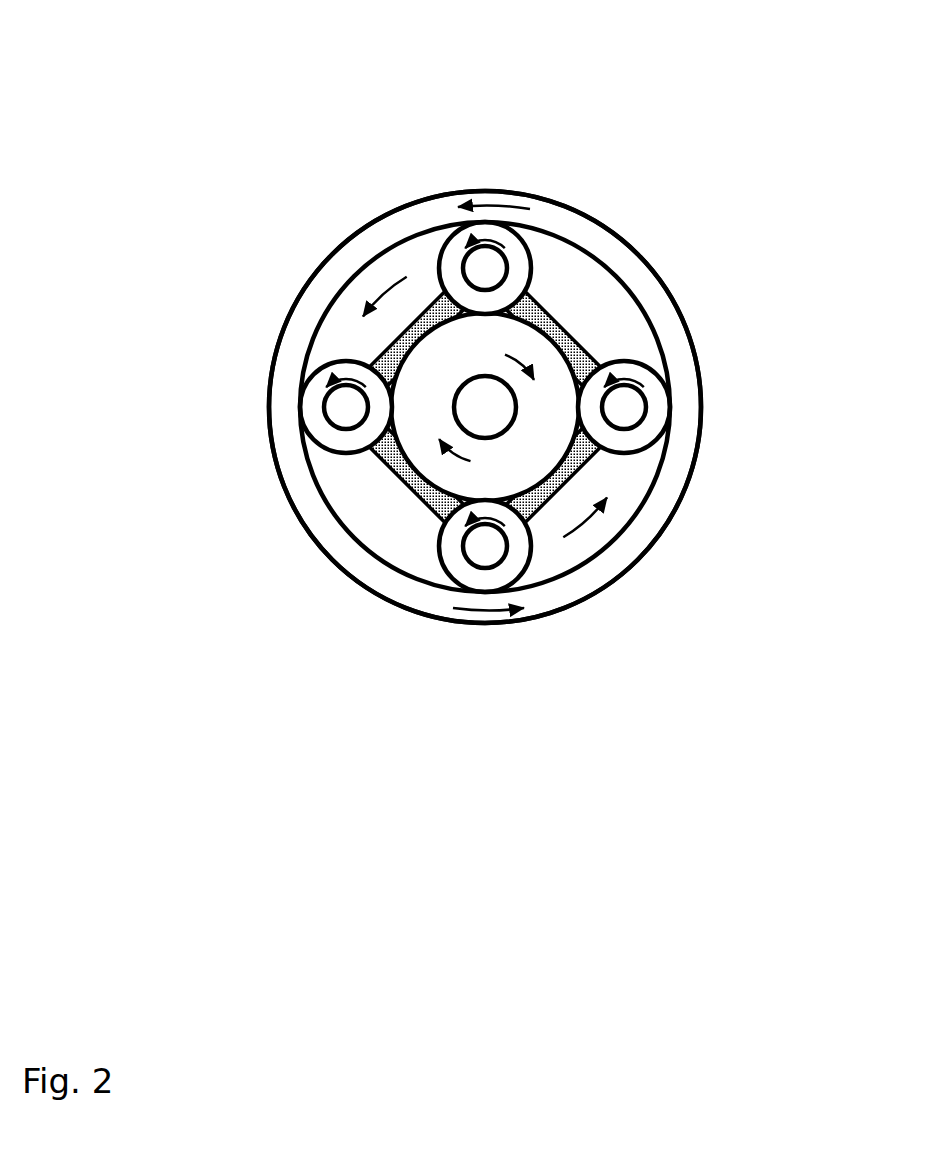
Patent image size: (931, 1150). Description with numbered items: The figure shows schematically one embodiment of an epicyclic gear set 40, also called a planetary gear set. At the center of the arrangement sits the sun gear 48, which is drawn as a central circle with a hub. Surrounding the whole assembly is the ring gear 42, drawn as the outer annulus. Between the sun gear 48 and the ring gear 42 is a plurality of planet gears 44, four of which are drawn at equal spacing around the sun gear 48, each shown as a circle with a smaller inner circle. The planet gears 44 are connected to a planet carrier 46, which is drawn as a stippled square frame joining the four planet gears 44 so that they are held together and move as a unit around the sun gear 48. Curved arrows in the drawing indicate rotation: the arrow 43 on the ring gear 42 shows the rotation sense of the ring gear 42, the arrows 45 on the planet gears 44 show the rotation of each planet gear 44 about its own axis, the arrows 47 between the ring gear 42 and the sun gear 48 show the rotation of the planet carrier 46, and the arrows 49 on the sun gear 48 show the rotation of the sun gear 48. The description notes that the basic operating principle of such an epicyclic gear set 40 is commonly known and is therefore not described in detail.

The epicyclic gear set 40 is at (655, 152).
The ring gear 42 is at (330, 250).
The rotation direction of outer ring 43 is at (496, 205).
The planet gears 44 is at (315, 408).
The rotation direction of roller 45 is at (350, 373).
The planet carrier 46 is at (426, 495).
The rotation direction of cage 47 is at (381, 288).
The sun gear 48 is at (557, 380).
The rotation direction of inner ring 49 is at (518, 360).